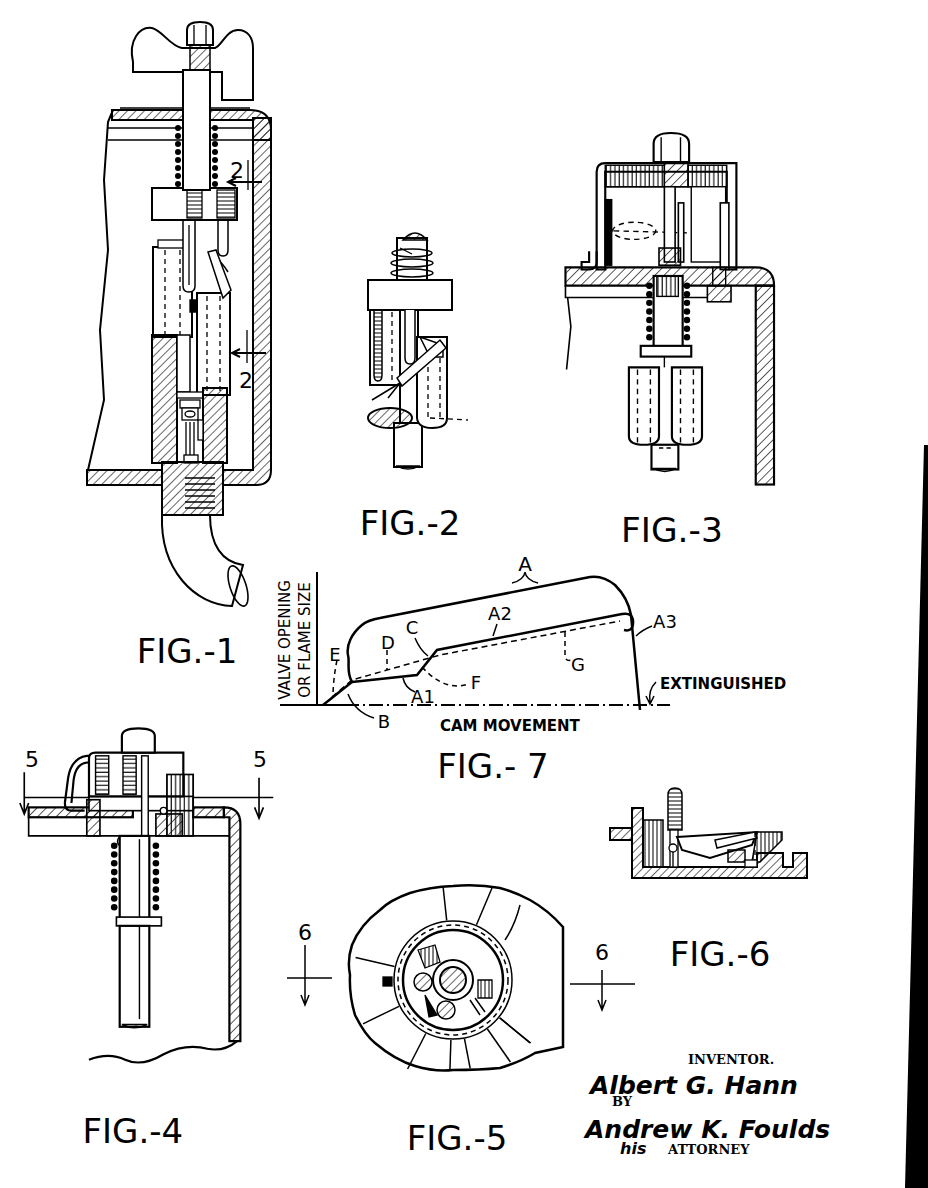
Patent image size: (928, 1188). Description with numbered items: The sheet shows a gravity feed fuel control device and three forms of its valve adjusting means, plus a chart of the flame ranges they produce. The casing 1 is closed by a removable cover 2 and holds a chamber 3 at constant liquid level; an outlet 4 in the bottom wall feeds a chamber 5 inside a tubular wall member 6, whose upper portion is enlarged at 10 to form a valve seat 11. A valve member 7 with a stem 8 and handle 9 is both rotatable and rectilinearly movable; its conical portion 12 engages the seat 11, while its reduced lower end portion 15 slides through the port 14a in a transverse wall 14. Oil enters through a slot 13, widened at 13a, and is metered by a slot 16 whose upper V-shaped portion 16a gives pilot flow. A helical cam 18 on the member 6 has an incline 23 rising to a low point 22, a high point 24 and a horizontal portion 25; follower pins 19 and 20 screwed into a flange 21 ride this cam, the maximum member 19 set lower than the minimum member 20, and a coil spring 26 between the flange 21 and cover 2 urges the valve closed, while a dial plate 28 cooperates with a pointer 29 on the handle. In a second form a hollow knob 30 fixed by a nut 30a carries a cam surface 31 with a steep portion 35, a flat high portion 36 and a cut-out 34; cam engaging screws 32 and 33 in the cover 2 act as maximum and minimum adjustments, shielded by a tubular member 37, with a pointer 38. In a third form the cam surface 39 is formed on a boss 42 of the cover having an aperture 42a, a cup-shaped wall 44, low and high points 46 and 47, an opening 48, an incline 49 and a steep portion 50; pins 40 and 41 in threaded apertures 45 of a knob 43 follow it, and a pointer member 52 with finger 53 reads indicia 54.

In FIG. 1, the casing 1 is at (272, 468).
In FIG. 3, the casing 1 is at (757, 385).
In FIG. 4, the casing 1 is at (220, 845).
In FIG. 1, the cover 2 is at (113, 110).
In FIG. 3, the cover 2 is at (733, 256).
In FIG. 4, the cover 2 is at (40, 806).
In FIG. 5, the cover 2 is at (563, 940).
In FIG. 6, the cover 2 is at (620, 828).
In FIG. 1, the chamber 3 is at (112, 255).
In FIG. 1, the oil outlet 4 is at (168, 480).
In FIG. 1, the chamber 5 is at (165, 371).
In FIG. 1, the tubular wall member 6 is at (153, 312).
In FIG. 2, the tubular wall member 6 is at (448, 404).
In FIG. 3, the tubular wall member 6 is at (690, 380).
In FIG. 1, the valve member 7 is at (175, 355).
In FIG. 2, the valve member 7 is at (422, 441).
In FIG. 3, the valve member 7 is at (643, 432).
In FIG. 4, the valve member 7 is at (120, 968).
In FIG. 1, the stem 8 is at (191, 153).
In FIG. 2, the stem 8 is at (428, 238).
In FIG. 3, the stem 8 is at (672, 311).
In FIG. 4, the stem 8 is at (120, 868).
In FIG. 5, the stem 8 is at (450, 965).
In FIG. 1, the handle 9 is at (155, 36).
In FIG. 2, the enlarged internal diameter portion 10 is at (460, 419).
In FIG. 3, the enlarged internal diameter portion 10 is at (636, 380).
In FIG. 1, the valve seat 11 is at (177, 395).
In FIG. 1, the conically formed portion 12 is at (215, 411).
In FIG. 1, the slot 13 is at (190, 306).
In FIG. 2, the slot 13 is at (372, 424).
In FIG. 1, the enlarged slot portion 13a is at (226, 300).
In FIG. 2, the enlarged slot portion 13a is at (376, 400).
In FIG. 1, the transverse wall 14 is at (182, 414).
In FIG. 1, the valve port 14a is at (180, 403).
In FIG. 1, the lower end portion 15 is at (203, 430).
In FIG. 1, the metering slot 16 is at (184, 458).
In FIG. 1, the V-shaped portion 16a is at (186, 430).
In FIG. 1, the cam 18 is at (224, 262).
In FIG. 2, the cam 18 is at (444, 348).
In FIG. 1, the maximum flow adjustment member 19 is at (183, 265).
In FIG. 2, the maximum flow adjustment member 19 is at (374, 361).
In FIG. 1, the minimum flow adjustment member 20 is at (229, 240).
In FIG. 2, the minimum flow adjustment member 20 is at (416, 333).
In FIG. 1, the flange 21 is at (152, 196).
In FIG. 2, the flange 21 is at (452, 290).
In FIG. 2, the low point 22 is at (444, 356).
In FIG. 1, the inclined cam portion 23 is at (226, 290).
In FIG. 2, the inclined cam portion 23 is at (420, 370).
In FIG. 1, the high point 24 is at (170, 244).
In FIG. 2, the high point 24 is at (372, 322).
In FIG. 1, the horizontal portion 25 is at (190, 218).
In FIG. 1, the coil spring 26 is at (176, 172).
In FIG. 2, the coil spring 26 is at (393, 252).
In FIG. 3, the coil spring 26 is at (638, 298).
In FIG. 4, the coil spring 26 is at (104, 886).
In FIG. 1, the dial plate 28 is at (150, 108).
In FIG. 1, the depending portion 29 is at (242, 66).
In FIG. 3, the knob 30 is at (716, 165).
In FIG. 3, the nut 30a is at (660, 130).
In FIG. 3, the helical cam surface 31 is at (608, 222).
In FIG. 3, the cam engaging member 32 is at (655, 197).
In FIG. 3, the cam engaging member 33 is at (716, 220).
In FIG. 3, the cut-out 34 is at (697, 190).
In FIG. 3, the steeply inclined portion 35 is at (680, 225).
In FIG. 3, the flattened portion 36 is at (650, 246).
In FIG. 3, the tubular member 37 is at (600, 200).
In FIG. 3, the pointer 38 is at (588, 212).
In FIG. 4, the helical cam surface 39 is at (157, 823).
In FIG. 5, the helical cam surface 39 is at (468, 930).
In FIG. 6, the helical cam surface 39 is at (680, 812).
In FIG. 4, the adjustment member 40 is at (134, 790).
In FIG. 5, the adjustment member 40 is at (445, 1020).
In FIG. 4, the adjustment member 41 is at (110, 822).
In FIG. 5, the adjustment member 41 is at (414, 980).
In FIG. 6, the adjustment member 41 is at (672, 868).
In FIG. 4, the boss 42 is at (180, 800).
In FIG. 6, the boss 42 is at (633, 860).
In FIG. 4, the aperture 42a is at (110, 833).
In FIG. 6, the aperture 42a is at (742, 867).
In FIG. 4, the knob 43 is at (90, 747).
In FIG. 4, the cup-shaped wall portion 44 is at (170, 780).
In FIG. 6, the cup-shaped wall portion 44 is at (645, 820).
In FIG. 4, the threaded apertures 45 is at (100, 747).
In FIG. 5, the low point 46 is at (400, 1006).
In FIG. 6, the low point 46 is at (700, 838).
In FIG. 5, the high point 47 is at (533, 1046).
In FIG. 6, the high point 47 is at (770, 834).
In FIG. 5, the cutout space 48 is at (472, 1016).
In FIG. 6, the cutout space 48 is at (735, 862).
In FIG. 5, the inclined portion 49 is at (432, 1014).
In FIG. 6, the inclined portion 49 is at (728, 838).
In FIG. 5, the steeply inclined portion 50 is at (490, 1000).
In FIG. 6, the steeply inclined portion 50 is at (755, 832).
In FIG. 4, the pointer member 52 is at (75, 750).
In FIG. 4, the finger 53 is at (63, 793).
In FIG. 5, the finger 53 is at (383, 985).
In FIG. 5, the indicia 54 is at (520, 905).